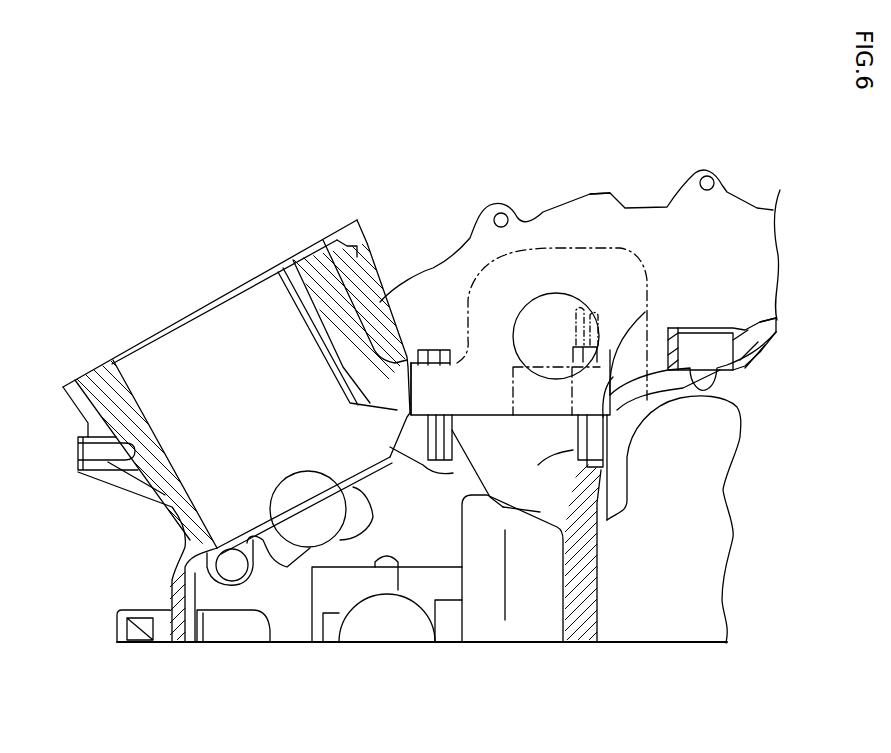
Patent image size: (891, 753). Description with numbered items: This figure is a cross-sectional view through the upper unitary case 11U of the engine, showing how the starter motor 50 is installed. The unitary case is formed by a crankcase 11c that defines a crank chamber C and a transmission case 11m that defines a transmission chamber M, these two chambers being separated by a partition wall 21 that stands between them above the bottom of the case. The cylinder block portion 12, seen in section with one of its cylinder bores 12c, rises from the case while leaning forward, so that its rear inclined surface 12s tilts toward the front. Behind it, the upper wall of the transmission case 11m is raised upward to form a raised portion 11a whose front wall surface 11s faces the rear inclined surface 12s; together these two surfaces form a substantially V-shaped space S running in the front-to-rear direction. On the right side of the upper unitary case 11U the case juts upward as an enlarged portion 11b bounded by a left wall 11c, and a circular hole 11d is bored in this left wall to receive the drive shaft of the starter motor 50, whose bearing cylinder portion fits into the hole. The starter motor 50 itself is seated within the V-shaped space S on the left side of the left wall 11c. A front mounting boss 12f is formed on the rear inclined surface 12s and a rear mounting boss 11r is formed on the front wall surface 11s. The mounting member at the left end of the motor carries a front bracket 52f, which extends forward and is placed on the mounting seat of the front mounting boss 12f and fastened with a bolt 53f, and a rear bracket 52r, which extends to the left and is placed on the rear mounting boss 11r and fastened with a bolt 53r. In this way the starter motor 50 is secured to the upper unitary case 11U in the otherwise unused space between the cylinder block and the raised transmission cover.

The upper unitary case 11U is at (417, 225).
The starter motor 50 is at (470, 227).
The circular hole 11d is at (542, 315).
The enlarged portion 11b is at (590, 200).
The left wall of enlarged portion 11c is at (670, 253).
The rear inclined surface 12s is at (410, 360).
The bolt 53f is at (430, 350).
The bolt 53r is at (556, 320).
The front wall surface 11s is at (638, 385).
The raised portion 11a is at (767, 327).
The cylinder bore 12c is at (252, 425).
The front bracket 52f is at (380, 432).
The front mounting boss 12f is at (452, 430).
The V-shaped space S is at (539, 458).
The rear bracket 52r is at (643, 430).
The rear mounting boss 11r is at (527, 492).
The cylinder block portion 12 is at (165, 507).
The partition wall 21 is at (595, 593).
The crank chamber C is at (493, 636).
The transmission chamber M is at (667, 636).
The transmission case 11m is at (652, 643).